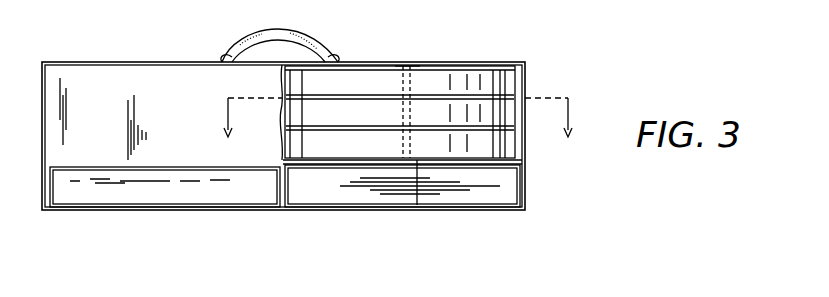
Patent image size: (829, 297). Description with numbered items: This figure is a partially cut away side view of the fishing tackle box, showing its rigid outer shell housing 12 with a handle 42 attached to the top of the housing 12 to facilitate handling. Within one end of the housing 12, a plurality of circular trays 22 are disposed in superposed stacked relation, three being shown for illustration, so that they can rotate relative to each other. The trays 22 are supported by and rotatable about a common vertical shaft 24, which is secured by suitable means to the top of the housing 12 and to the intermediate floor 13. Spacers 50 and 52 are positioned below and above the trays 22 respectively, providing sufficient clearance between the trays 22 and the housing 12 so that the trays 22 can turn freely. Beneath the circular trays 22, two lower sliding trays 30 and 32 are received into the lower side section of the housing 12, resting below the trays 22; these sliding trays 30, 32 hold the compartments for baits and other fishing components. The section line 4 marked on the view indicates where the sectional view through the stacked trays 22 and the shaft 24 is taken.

The housing 12 is at (184, 101).
The handle 42 is at (313, 39).
The circular trays 22 is at (493, 92).
The spacer 52 is at (401, 66).
The vertical shaft 24 is at (406, 65).
The intermediate floor 13 is at (520, 158).
The lower sliding tray 32 is at (262, 199).
The lower sliding tray 30 is at (325, 199).
The spacer 50 is at (417, 205).
The section line 4- 4 is at (396, 124).